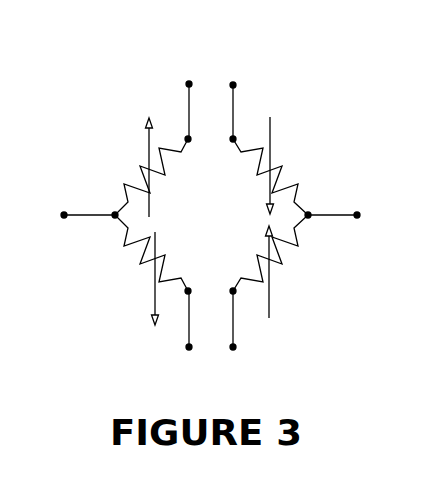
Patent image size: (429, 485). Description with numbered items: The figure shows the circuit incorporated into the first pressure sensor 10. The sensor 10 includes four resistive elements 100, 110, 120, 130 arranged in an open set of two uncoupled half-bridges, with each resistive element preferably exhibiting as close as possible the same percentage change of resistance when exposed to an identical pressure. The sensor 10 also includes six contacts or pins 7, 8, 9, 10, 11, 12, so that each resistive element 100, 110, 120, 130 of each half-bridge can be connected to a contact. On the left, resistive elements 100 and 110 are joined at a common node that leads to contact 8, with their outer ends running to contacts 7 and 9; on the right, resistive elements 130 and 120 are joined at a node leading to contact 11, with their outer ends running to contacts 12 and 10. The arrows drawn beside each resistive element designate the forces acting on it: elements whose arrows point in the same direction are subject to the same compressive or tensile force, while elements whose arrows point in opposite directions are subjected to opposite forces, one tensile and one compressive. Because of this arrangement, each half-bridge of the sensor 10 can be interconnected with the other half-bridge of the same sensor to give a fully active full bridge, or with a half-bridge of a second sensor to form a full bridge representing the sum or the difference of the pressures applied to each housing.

The first pressure sensor 10 is at (364, 43).
The contact 7 is at (189, 100).
The contact 8 is at (81, 215).
The contact 9 is at (189, 332).
The contact 11 is at (348, 215).
The contact 12 is at (236, 100).
The resistive element 100 is at (137, 177).
The resistive element 110 is at (129, 260).
The resistive element 120 is at (292, 262).
The resistive element 130 is at (286, 180).